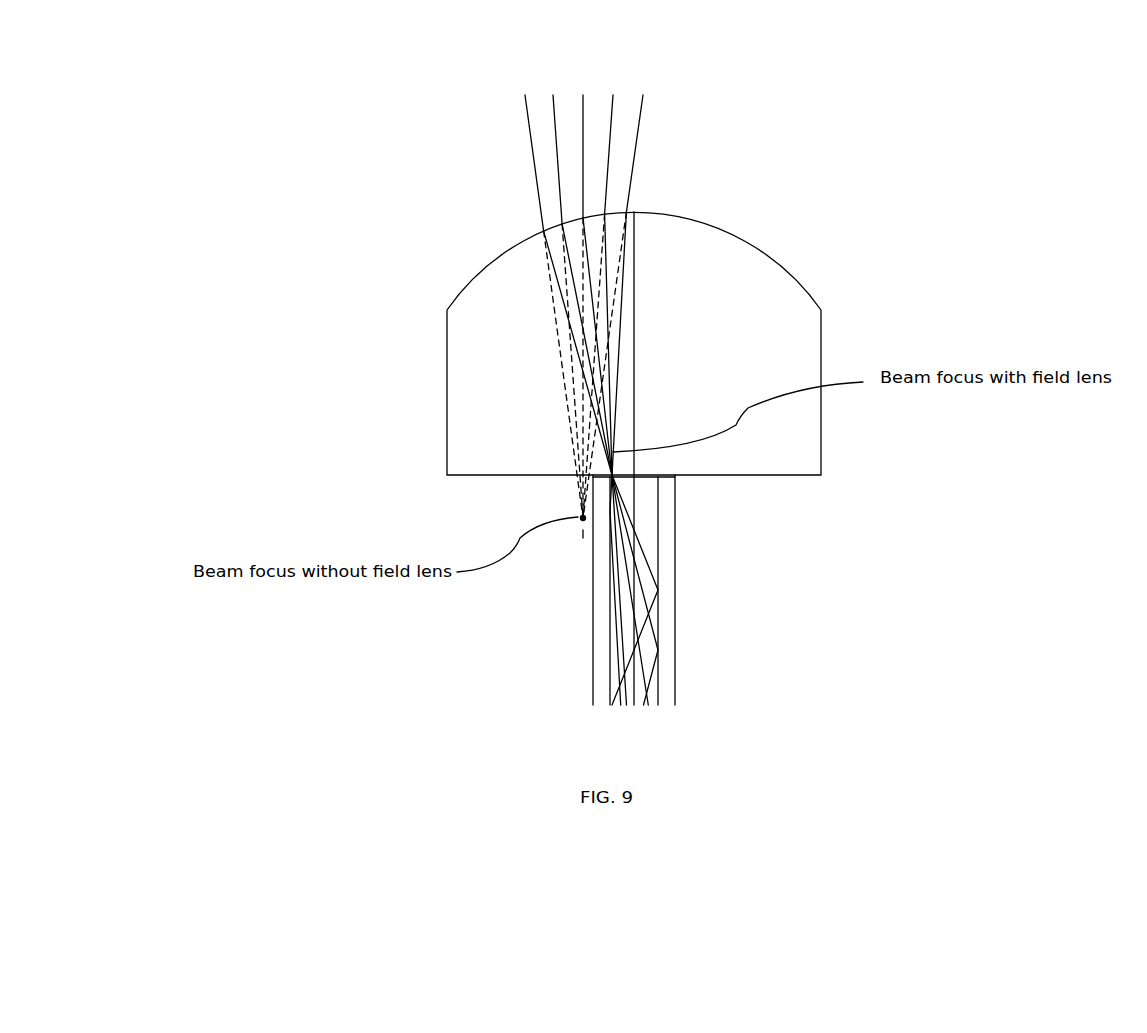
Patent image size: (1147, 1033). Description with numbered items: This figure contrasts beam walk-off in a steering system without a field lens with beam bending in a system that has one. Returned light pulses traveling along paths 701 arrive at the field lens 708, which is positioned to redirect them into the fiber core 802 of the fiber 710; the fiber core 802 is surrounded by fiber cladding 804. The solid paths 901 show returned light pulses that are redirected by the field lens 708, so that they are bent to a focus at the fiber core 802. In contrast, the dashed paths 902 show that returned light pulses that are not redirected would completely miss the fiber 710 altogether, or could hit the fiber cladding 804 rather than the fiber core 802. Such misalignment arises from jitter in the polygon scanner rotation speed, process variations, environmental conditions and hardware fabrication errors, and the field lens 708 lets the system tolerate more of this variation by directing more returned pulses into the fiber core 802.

The paths 701 is at (530, 148).
The field lens 708 is at (802, 288).
The paths 901 is at (682, 325).
The paths 902 is at (554, 430).
The fiber 710 is at (727, 590).
The fiber core 802 is at (660, 528).
The fiber cladding 804 is at (677, 592).